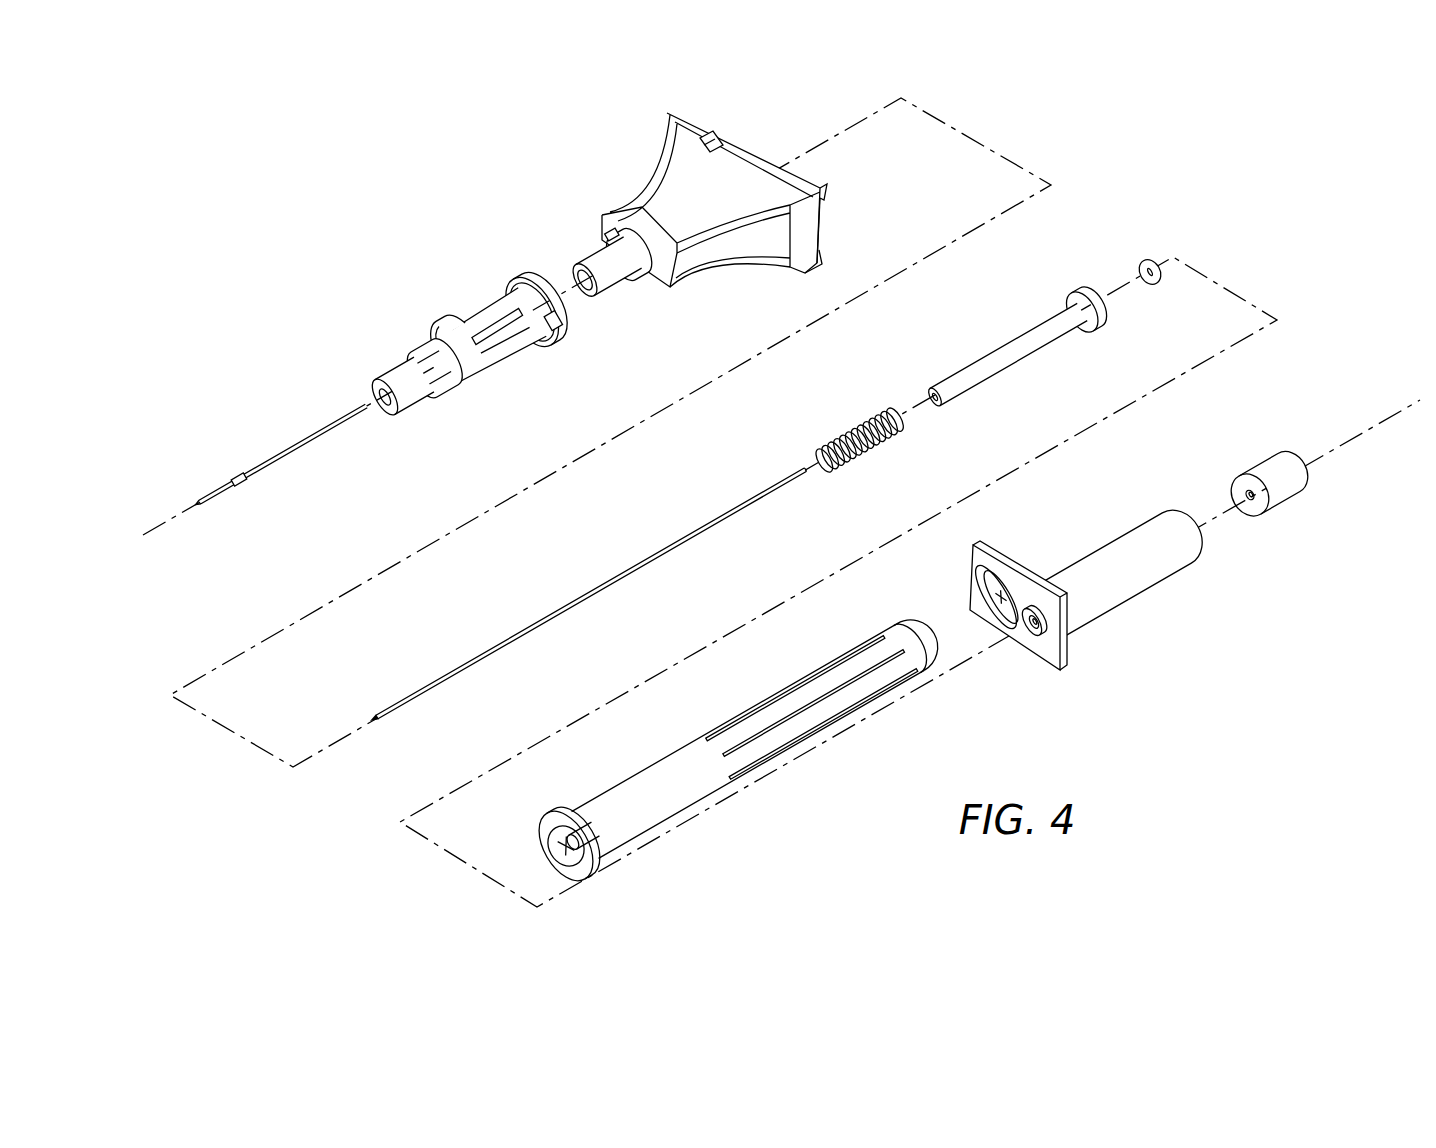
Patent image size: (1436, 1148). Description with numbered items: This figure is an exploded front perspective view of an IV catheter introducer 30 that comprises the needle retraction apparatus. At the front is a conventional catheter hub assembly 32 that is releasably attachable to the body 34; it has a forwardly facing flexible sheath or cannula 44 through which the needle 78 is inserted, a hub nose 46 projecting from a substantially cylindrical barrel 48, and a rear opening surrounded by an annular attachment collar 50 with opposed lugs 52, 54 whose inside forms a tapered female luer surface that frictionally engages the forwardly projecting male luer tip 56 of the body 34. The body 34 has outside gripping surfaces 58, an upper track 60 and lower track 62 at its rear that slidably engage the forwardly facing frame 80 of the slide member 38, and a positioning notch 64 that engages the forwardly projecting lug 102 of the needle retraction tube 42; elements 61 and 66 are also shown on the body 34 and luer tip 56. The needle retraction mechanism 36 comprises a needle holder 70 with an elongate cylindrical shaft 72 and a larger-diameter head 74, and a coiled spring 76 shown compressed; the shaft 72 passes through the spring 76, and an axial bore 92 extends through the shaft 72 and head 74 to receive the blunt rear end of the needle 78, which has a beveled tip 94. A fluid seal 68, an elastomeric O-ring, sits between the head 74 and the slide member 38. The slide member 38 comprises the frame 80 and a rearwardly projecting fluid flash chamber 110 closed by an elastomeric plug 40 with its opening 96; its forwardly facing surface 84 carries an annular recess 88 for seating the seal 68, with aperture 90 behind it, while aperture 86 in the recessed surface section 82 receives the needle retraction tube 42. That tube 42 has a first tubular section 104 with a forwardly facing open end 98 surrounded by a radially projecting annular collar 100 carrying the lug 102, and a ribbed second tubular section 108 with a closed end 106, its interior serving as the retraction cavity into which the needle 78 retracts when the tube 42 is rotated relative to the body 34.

The IV catheter introducer 30 is at (781, 508).
The catheter hub assembly 32 is at (416, 371).
The body 34 is at (723, 202).
The needle retraction mechanism 36 is at (855, 424).
The slide member 38 is at (1171, 539).
The elastomeric plug 40 is at (1269, 487).
The needle retraction tube 42 is at (729, 760).
The flexible sheath or cannula 44 is at (312, 455).
The hub nose 46 is at (405, 405).
The barrel 48 is at (498, 355).
The annular attachment collar 50 is at (548, 333).
The lug 52 is at (528, 283).
The lug 54 is at (523, 360).
The male luer tip 56 is at (598, 256).
The gripping surfaces 58 is at (717, 262).
The upper track 60 is at (822, 208).
The flange side edge 61 is at (826, 225).
The lower track 62 is at (824, 252).
The positioning notch 64 is at (715, 150).
The collar 66 is at (630, 208).
The fluid seal 68 is at (1152, 285).
The needle holder 70 is at (989, 324).
The shaft 72 is at (1017, 340).
The head 74 is at (1093, 292).
The spring 76 is at (873, 448).
The needle 78 is at (589, 595).
The frame 80 is at (1033, 586).
The recessed surface section 82 is at (977, 565).
The forwardly facing surface 84 is at (1050, 665).
The aperture 86 is at (980, 590).
The annular recess 88 is at (1023, 636).
The aperture 90 is at (1038, 620).
The axial bore 92 is at (928, 400).
The beveled tip 94 is at (378, 716).
The cap opening 96 is at (1242, 505).
The open end 98 is at (548, 850).
The annular collar 100 is at (578, 872).
The lug 102 is at (600, 820).
The first tubular section 104 is at (668, 757).
The closed end 106 is at (928, 640).
The second tubular section 108 is at (840, 667).
The fluid flash chamber 110 is at (1105, 530).